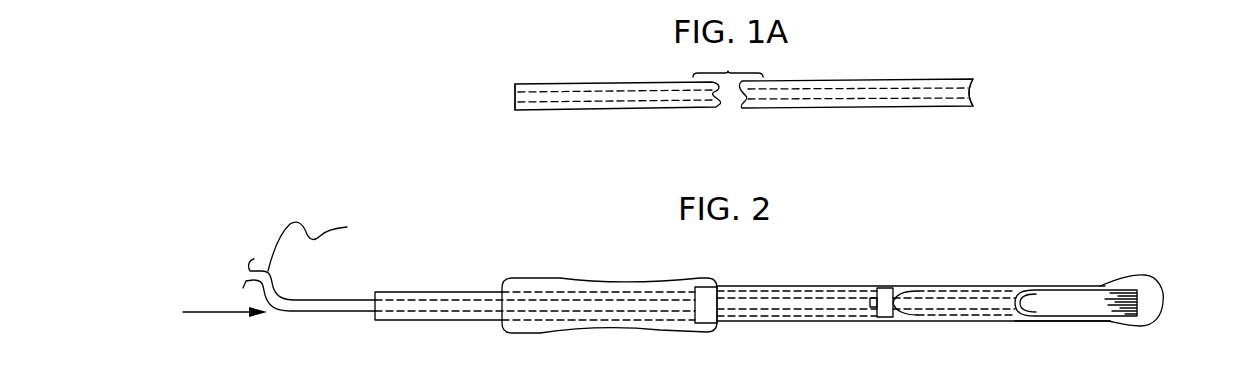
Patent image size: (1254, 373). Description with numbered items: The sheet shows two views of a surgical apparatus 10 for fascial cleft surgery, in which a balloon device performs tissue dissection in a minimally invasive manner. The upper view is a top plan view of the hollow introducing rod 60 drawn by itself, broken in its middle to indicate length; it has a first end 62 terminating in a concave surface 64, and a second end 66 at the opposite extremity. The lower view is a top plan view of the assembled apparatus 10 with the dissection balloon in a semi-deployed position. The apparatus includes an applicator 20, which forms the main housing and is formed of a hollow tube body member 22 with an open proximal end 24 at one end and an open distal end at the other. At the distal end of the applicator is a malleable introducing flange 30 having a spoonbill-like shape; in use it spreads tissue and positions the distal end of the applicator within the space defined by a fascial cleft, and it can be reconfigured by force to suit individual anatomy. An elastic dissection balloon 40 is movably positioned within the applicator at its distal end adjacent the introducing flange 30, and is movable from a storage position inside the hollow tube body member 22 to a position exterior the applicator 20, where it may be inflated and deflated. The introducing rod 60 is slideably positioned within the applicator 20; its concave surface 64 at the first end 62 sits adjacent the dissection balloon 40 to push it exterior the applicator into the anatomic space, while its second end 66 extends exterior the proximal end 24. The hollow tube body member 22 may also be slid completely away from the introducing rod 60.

In FIG. 2, the surgical apparatus 10 is at (781, 262).
In FIG. 2, the applicator 20 is at (820, 278).
In FIG. 2, the hollow tube body member 22 is at (908, 287).
In FIG. 2, the open proximal end 24 is at (1046, 321).
In FIG. 2, the malleable introducing flange 30 is at (1147, 296).
In FIG. 2, the elastic dissection balloon 40 is at (1050, 301).
In FIG. 1A, the hollow introducing rod 60 is at (656, 107).
In FIG. 1A, the first end 62 is at (934, 108).
In FIG. 1A, the concave surface 64 is at (963, 94).
In FIG. 1A, the second end 66 is at (562, 111).